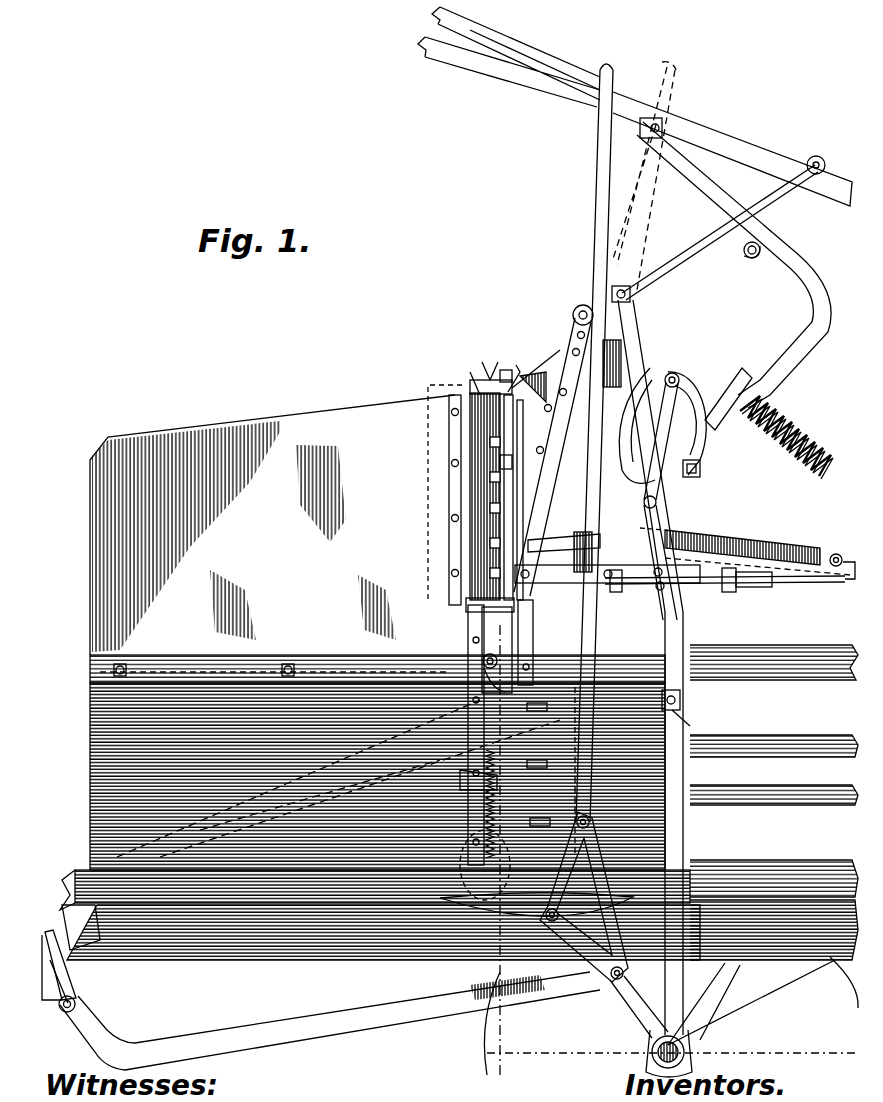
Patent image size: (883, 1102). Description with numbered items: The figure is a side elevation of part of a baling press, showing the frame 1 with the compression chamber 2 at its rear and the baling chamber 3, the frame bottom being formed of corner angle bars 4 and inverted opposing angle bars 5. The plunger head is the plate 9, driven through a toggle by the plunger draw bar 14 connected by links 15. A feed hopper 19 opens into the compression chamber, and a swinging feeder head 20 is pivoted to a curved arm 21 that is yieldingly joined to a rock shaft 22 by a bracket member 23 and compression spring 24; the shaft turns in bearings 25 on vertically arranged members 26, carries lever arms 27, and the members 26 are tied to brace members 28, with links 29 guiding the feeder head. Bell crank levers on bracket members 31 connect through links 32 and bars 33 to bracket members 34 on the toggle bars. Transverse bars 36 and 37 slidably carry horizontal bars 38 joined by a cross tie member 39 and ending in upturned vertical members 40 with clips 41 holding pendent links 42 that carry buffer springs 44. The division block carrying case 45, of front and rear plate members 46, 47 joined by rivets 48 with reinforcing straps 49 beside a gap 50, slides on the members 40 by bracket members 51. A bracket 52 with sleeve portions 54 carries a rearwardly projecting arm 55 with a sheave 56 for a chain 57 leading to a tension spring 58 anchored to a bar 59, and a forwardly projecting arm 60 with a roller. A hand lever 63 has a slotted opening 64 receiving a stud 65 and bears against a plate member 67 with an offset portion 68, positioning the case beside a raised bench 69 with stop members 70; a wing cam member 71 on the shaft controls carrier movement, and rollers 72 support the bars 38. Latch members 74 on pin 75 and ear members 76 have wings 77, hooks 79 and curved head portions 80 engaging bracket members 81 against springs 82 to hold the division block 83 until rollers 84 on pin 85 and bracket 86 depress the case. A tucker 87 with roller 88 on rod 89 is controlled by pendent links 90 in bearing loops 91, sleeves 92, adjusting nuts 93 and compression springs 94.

The frame 1 is at (760, 648).
The compression chamber 2 is at (92, 728).
The baling chamber 3 is at (774, 789).
The corner angle bars 4 is at (800, 870).
The inverted opposing angle bars 5 is at (748, 950).
The plunger head plate 9 is at (597, 642).
The plunger draw bar 14 is at (838, 968).
The links 15 is at (72, 880).
The feed hopper 19 is at (92, 505).
The swinging feeder head 20 is at (530, 85).
The curved arm 21 is at (805, 322).
The rock shaft 22 is at (700, 476).
The bracket member 23 is at (735, 385).
The compression spring 24 is at (772, 440).
The bearings 25 is at (672, 505).
The vertically arranged members 26 is at (688, 622).
The lever arms 27 is at (695, 380).
The brace members 28 is at (575, 345).
The links 29 is at (700, 248).
The bracket members 31 is at (470, 945).
The links 32 is at (670, 377).
The longitudinally arranged bars 33 is at (396, 1022).
The bracket members 34 is at (76, 986).
The transverse bar 36 is at (640, 641).
The transverse bar 37 is at (568, 615).
The longitudinally arranged bars 38 is at (762, 584).
The cross tie member 39 is at (735, 586).
The upturned vertical members 40 is at (492, 380).
The clips 41 is at (485, 364).
The pendent links 42 is at (555, 425).
The buffer springs 44 is at (520, 485).
The division block carrying case 45 is at (505, 495).
The front plate member 46 is at (488, 478).
The rear plate member 47 is at (510, 515).
The rivets 48 is at (470, 374).
The reinforcing straps 49 is at (466, 392).
The gap 50 is at (624, 988).
The bracket members 51 is at (452, 410).
The bracket 52 is at (545, 575).
The sleeve portions 54 is at (560, 598).
The rearwardly projecting arm 55 is at (525, 500).
The sheave 56 is at (515, 510).
The chain 57 is at (565, 534).
The tension spring 58 is at (755, 542).
The bar 59 is at (848, 582).
The forwardly projecting arm 60 is at (665, 528).
The hand lever 63 is at (600, 178).
The slotted opening 64 is at (630, 590).
The laterally projecting stud 65 is at (640, 621).
The plate member 67 is at (575, 642).
The offset portion 68 is at (585, 627).
The raised bench 69 is at (445, 640).
The stop members 70 is at (470, 605).
The wing cam member 71 is at (650, 390).
The rollers 72 is at (553, 612).
The latch members 74 is at (516, 372).
The pin 75 is at (470, 425).
The ear members 76 is at (478, 445).
The wings 77 is at (538, 395).
The hooks 79 is at (500, 462).
The curved head portions 80 is at (505, 370).
The bracket members 81 is at (528, 378).
The springs 82 is at (545, 445).
The division block 83 is at (470, 540).
The rollers 84 is at (736, 255).
The pin 85 is at (753, 256).
The bracket 86 is at (746, 244).
The tucker 87 is at (465, 652).
The roller 88 is at (412, 657).
The transverse rod 89 is at (470, 660).
The pendent links 90 is at (345, 660).
The bearing loops 91 is at (684, 706).
The sleeves 92 is at (483, 664).
The adjusting nuts 93 is at (572, 897).
The compression springs 94 is at (485, 831).